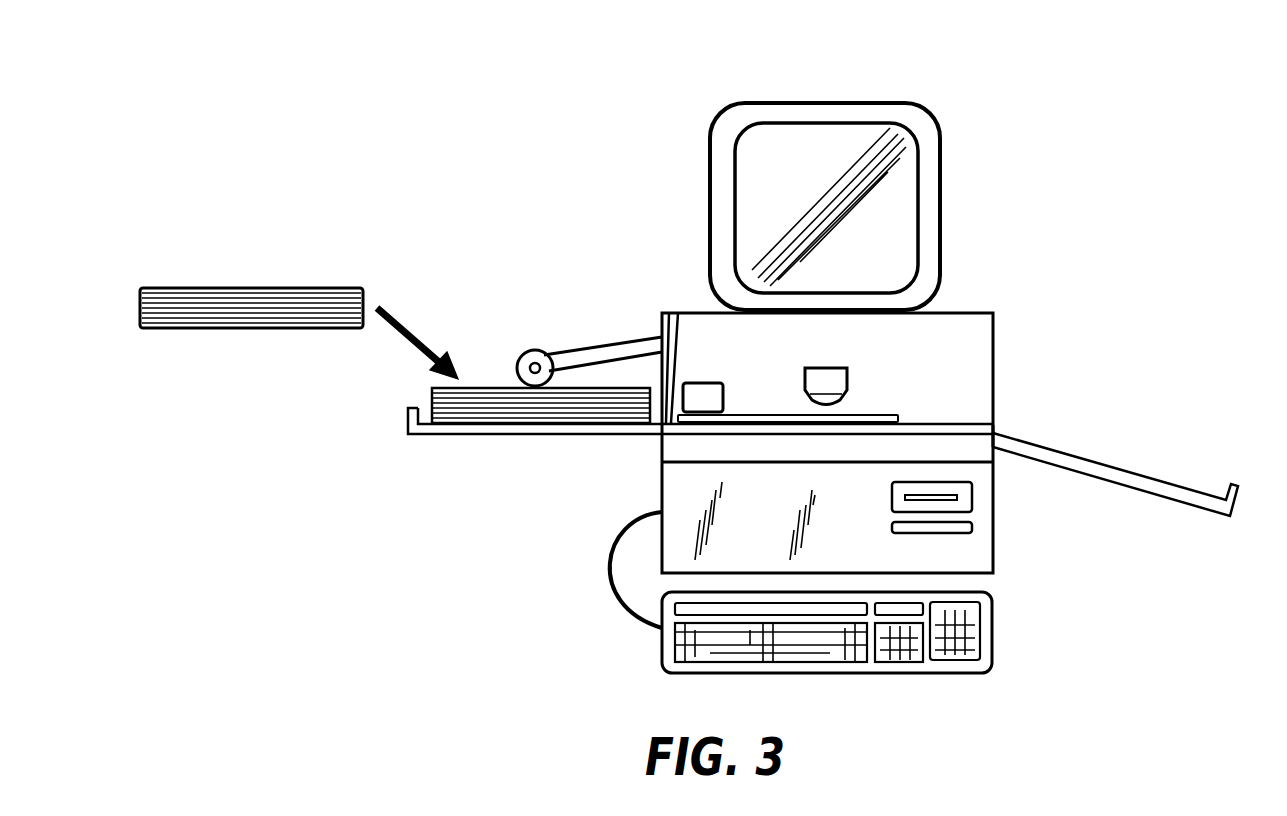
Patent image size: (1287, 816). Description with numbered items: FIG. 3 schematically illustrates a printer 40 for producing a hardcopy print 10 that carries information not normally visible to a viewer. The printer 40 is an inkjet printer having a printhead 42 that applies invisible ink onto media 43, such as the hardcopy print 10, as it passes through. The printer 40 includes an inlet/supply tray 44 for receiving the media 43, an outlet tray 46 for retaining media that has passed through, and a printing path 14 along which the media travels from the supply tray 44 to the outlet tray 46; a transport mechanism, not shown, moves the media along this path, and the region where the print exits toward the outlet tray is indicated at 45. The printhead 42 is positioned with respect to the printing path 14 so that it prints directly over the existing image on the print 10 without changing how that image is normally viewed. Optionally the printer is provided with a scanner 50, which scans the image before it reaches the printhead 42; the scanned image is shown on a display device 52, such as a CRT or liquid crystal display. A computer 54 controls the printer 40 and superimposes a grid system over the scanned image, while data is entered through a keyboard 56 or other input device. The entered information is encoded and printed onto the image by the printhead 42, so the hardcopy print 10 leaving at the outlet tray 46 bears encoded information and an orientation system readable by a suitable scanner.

The hardcopy print 10 is at (893, 415).
The printing path 14 is at (669, 313).
The printer 40 is at (888, 76).
The printhead 42 is at (826, 368).
The media 43 is at (257, 287).
The inlet/supply tray 44 is at (480, 440).
The outlet 45 is at (977, 422).
The outlet tray 46 is at (1112, 468).
The scanner 50 is at (702, 383).
The display device 52 is at (928, 152).
The computer 54 is at (993, 512).
The keyboard 56 is at (993, 630).